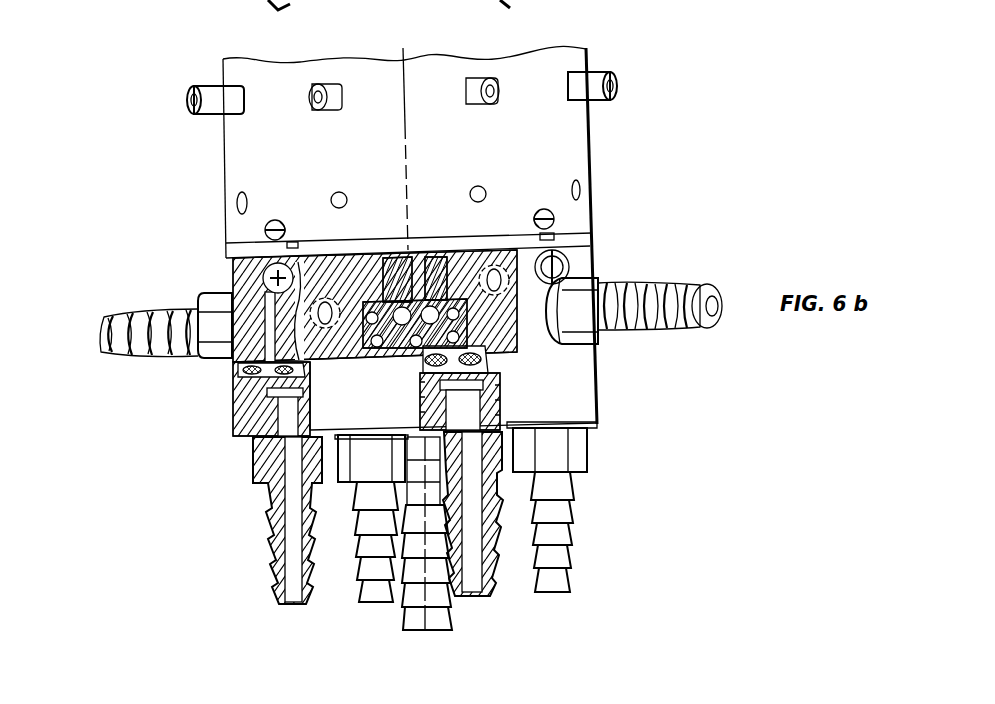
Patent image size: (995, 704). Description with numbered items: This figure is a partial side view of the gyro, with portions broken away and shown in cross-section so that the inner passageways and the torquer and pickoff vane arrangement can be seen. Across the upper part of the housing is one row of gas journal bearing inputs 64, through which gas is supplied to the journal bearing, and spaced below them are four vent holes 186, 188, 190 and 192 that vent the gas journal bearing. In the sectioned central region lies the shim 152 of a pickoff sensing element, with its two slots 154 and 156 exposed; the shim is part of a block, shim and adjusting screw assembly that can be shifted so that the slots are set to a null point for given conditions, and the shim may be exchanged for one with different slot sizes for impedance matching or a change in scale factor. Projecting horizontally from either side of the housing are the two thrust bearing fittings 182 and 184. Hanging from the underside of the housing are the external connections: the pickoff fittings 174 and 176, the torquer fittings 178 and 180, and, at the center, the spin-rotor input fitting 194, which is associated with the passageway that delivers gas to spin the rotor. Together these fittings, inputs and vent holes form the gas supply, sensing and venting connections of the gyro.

The gas journal bearing inputs 64 is at (598, 66).
The shim 152 is at (400, 356).
The slot 154 is at (400, 306).
The slot 156 is at (430, 306).
The pickoff fitting 174 is at (490, 556).
The pickoff fitting 176 is at (362, 552).
The torquer fitting 178 is at (576, 508).
The torquer fitting 180 is at (258, 508).
The thrust bearing fitting 182 is at (704, 336).
The thrust bearing fitting 184 is at (102, 348).
The vent hole 186 is at (580, 184).
The vent hole 188 is at (477, 186).
The vent hole 190 is at (340, 192).
The vent hole 192 is at (243, 191).
The spin-rotor input fitting 194 is at (404, 612).